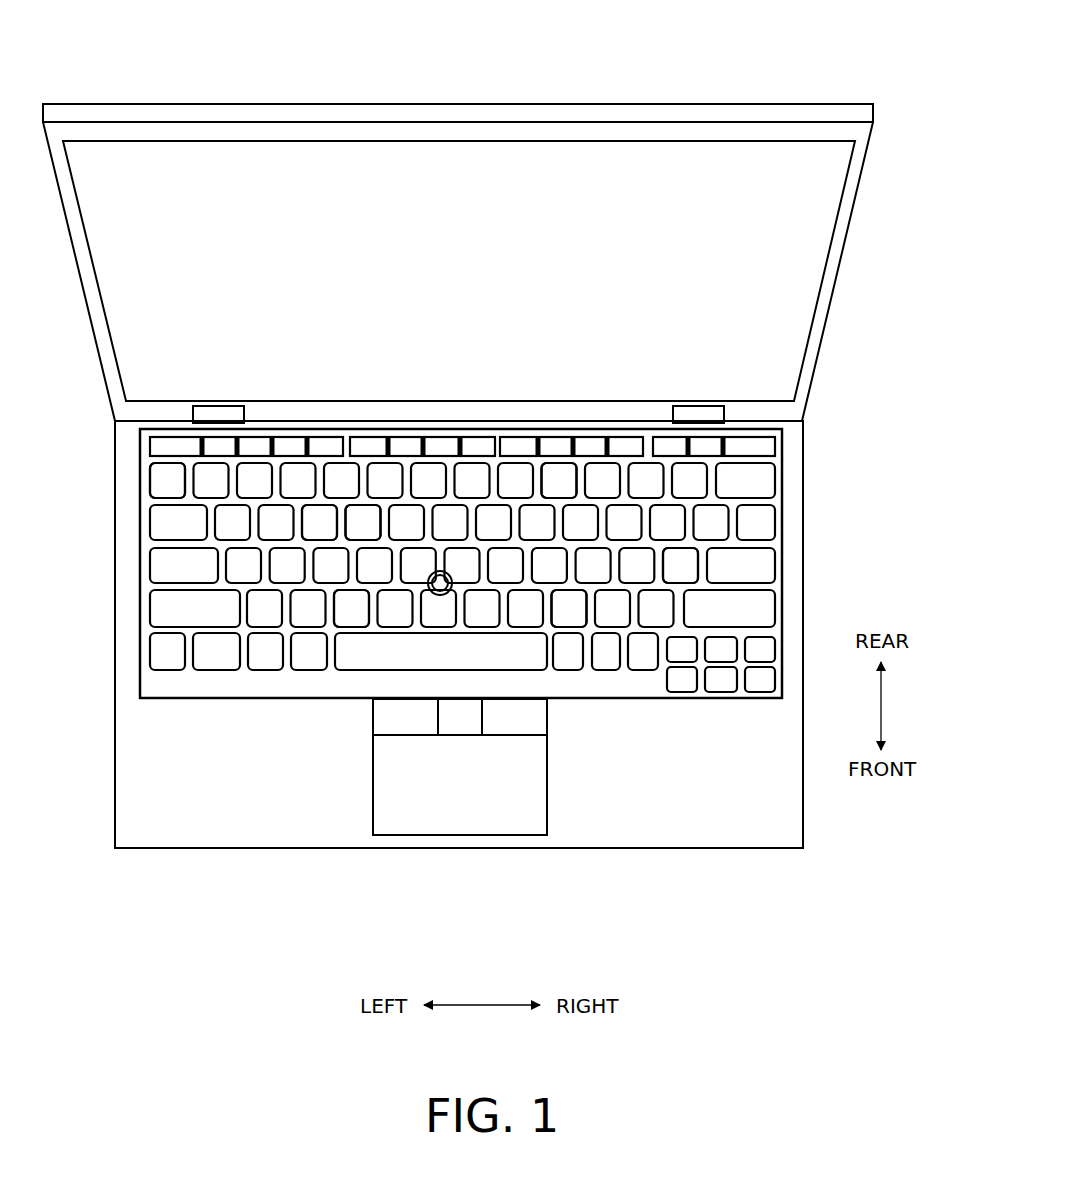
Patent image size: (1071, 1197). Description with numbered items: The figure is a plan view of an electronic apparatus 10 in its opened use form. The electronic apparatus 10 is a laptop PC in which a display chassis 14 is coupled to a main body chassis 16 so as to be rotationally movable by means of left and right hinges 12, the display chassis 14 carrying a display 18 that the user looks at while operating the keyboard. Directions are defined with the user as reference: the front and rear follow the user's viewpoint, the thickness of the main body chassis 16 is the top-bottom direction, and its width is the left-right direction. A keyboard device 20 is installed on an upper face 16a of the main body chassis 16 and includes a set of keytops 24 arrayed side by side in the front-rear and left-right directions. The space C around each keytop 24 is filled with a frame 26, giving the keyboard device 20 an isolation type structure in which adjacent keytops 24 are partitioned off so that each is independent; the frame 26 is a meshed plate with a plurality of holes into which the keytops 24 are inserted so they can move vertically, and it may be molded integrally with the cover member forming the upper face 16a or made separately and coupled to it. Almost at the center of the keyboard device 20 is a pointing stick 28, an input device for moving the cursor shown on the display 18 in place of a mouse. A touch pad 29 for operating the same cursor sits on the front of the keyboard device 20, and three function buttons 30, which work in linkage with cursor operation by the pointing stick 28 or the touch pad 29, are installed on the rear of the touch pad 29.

The electronic apparatus 10 is at (63, 45).
The hinges 12 is at (216, 412).
The display chassis 14 is at (861, 190).
The main body chassis 16 is at (822, 600).
The upper face 16a is at (133, 768).
The display 18 is at (800, 258).
The keyboard device 20 is at (138, 542).
The keytops 24 is at (322, 522).
The frame 26 is at (150, 628).
The pointing stick 28 is at (440, 583).
The touch pad 29 is at (465, 835).
The function buttons 30 is at (408, 720).
The space C is at (183, 493).